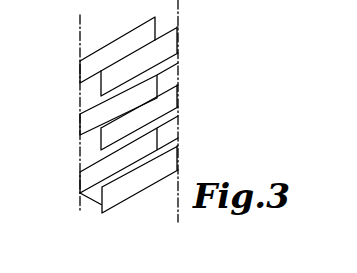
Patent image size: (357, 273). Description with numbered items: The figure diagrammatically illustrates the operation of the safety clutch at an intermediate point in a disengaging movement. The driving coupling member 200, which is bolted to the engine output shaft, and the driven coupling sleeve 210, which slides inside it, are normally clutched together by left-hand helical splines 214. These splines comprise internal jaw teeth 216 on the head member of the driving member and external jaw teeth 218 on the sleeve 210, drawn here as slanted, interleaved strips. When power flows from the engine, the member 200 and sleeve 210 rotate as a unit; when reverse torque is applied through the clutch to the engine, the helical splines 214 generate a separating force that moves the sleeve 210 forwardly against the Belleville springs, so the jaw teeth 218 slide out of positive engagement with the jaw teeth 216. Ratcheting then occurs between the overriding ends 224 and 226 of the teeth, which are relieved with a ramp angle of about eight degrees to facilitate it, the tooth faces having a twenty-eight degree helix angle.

The driving coupling member 200 is at (188, 174).
The driven coupling sleeve 210 is at (78, 43).
The helical splines 214 is at (157, 22).
The internal jaw teeth 216 is at (158, 157).
The external jaw teeth 218 is at (80, 115).
The overriding end 224 is at (104, 184).
The overriding end 226 is at (158, 33).